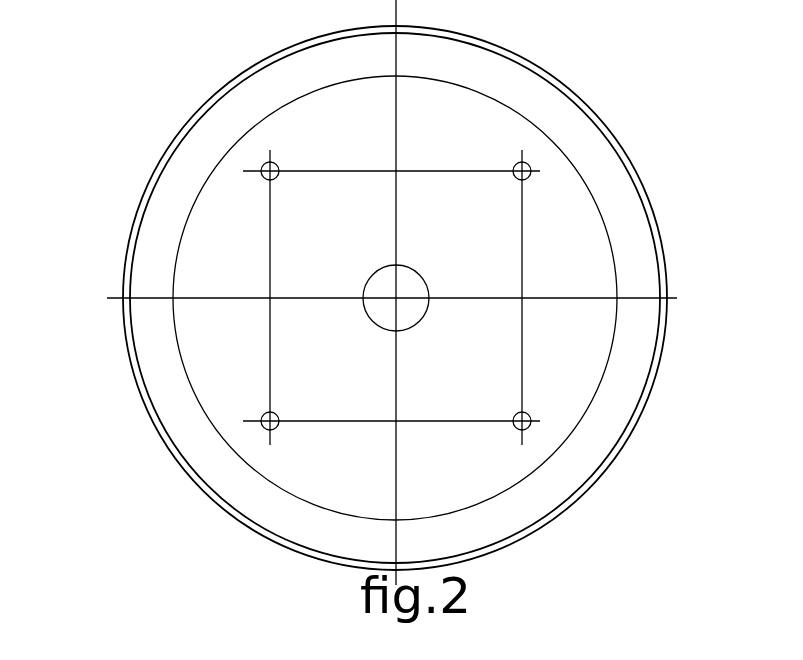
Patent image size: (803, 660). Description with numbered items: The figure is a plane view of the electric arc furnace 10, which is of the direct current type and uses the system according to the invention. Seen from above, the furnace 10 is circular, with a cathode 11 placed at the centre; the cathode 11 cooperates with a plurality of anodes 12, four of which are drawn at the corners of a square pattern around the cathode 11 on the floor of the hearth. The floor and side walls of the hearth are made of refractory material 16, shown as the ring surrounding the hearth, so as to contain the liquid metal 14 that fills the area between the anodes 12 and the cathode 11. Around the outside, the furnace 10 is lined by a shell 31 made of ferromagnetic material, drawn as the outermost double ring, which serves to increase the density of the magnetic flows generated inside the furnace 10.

The electric arc furnace 10 is at (249, 558).
The cathode 11 is at (382, 290).
The anodes 12 is at (266, 167).
The liquid metal 14 is at (482, 252).
The refractory material 16 is at (170, 367).
The shell 31 is at (650, 373).